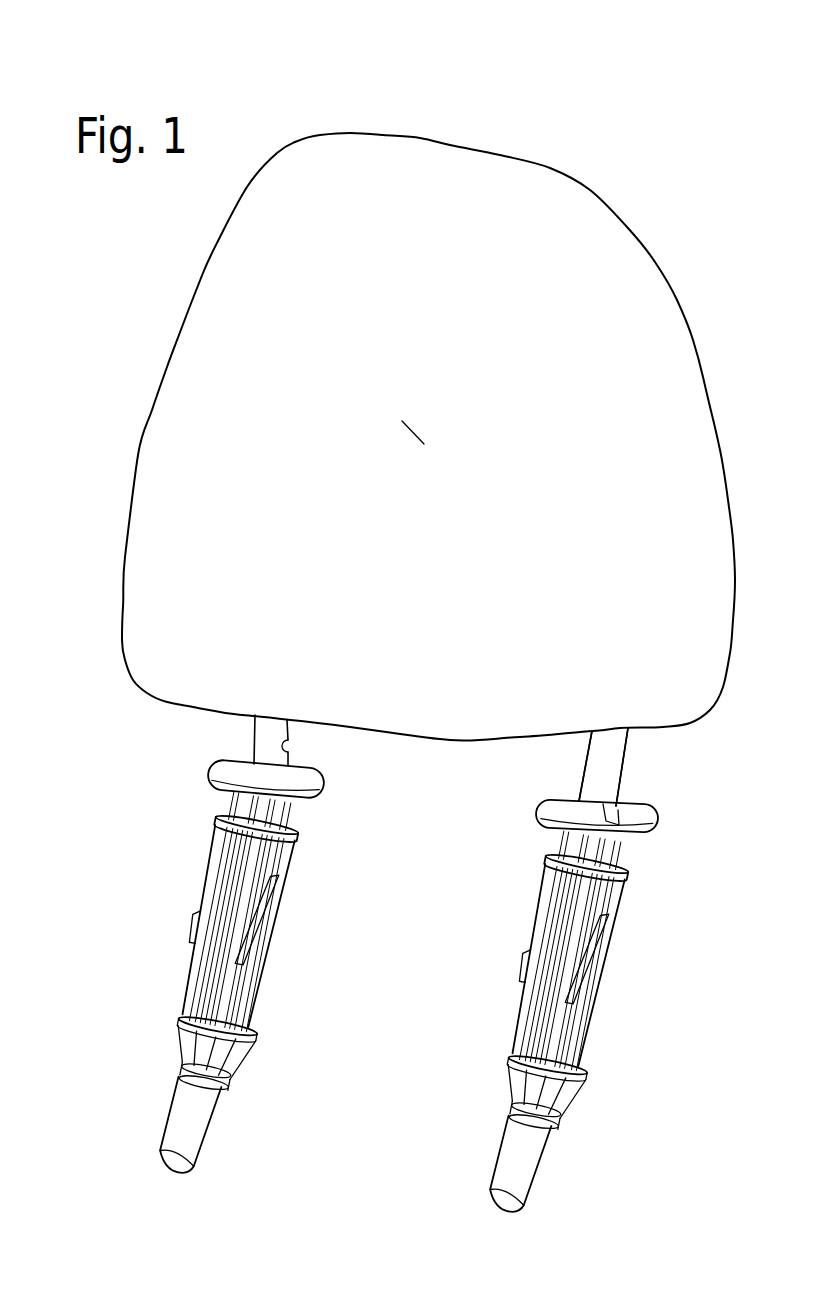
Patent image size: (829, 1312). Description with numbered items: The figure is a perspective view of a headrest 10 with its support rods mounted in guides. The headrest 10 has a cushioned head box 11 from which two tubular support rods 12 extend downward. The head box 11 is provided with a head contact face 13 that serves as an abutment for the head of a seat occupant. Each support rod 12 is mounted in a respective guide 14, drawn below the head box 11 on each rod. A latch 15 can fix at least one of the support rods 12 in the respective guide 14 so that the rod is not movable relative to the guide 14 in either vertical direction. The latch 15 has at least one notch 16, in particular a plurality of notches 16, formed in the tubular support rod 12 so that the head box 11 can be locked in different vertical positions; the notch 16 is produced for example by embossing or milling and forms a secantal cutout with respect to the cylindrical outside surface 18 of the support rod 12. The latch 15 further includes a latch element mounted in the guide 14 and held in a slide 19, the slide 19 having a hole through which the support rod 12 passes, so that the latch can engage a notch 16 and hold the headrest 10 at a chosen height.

The headrest 10 is at (677, 137).
The head box 11 is at (637, 333).
The support rod 12 is at (272, 733).
The head contact face 13 is at (424, 443).
The guide 14 is at (290, 870).
The latch 15 is at (195, 772).
The notch 16 is at (298, 753).
The cylindrical outside surface 18 is at (628, 756).
The slide 19 is at (660, 823).